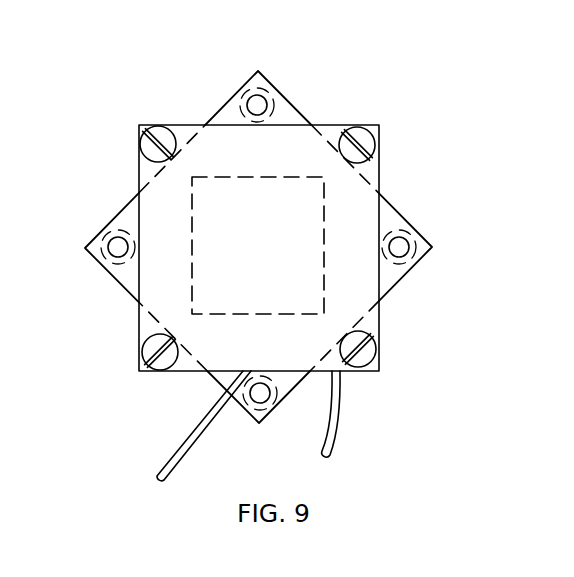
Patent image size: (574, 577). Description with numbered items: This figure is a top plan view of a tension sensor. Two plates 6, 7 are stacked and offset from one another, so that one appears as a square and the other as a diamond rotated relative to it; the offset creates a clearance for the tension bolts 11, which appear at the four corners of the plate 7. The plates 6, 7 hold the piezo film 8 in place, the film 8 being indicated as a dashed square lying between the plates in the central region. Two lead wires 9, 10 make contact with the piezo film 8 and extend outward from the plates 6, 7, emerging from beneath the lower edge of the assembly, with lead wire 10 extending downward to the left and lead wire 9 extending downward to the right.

The plate 6 is at (260, 72).
The plate 7 is at (379, 125).
The piezo film 8 is at (308, 222).
The lead wire 9 is at (340, 421).
The lead wire 10 is at (173, 475).
The tension bolt 11 is at (158, 126).